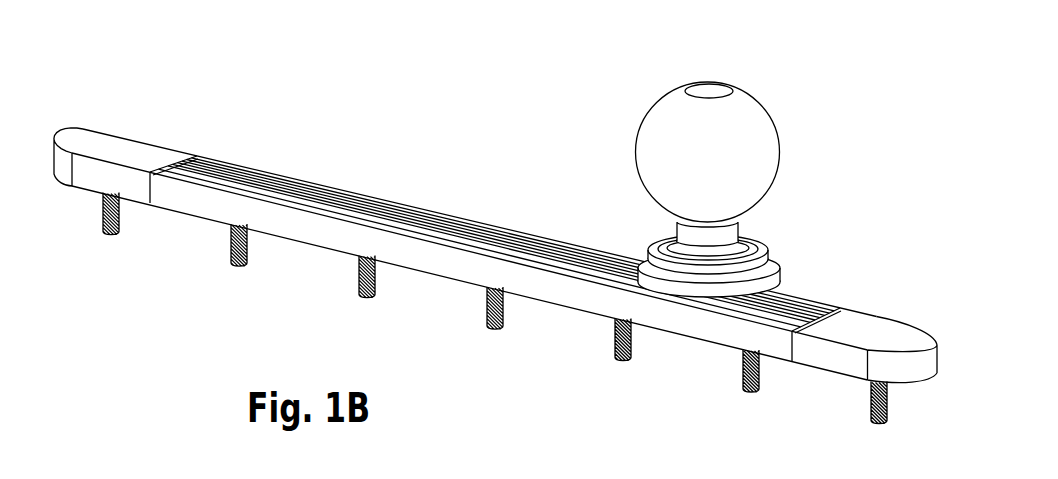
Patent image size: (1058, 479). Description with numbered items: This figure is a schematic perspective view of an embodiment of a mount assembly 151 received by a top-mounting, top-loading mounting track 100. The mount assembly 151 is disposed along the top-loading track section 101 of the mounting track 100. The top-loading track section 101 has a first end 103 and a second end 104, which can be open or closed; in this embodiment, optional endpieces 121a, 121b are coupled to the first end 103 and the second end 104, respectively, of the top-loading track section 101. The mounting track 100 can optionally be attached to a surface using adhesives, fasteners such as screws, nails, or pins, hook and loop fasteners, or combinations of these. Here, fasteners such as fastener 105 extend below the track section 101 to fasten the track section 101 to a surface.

The top-loading mounting track 100 is at (495, 229).
The top-loading track section 101 is at (402, 179).
The first end 103 is at (848, 230).
The second end 104 is at (232, 117).
The fastener 105 is at (616, 347).
The endpiece 121a is at (887, 304).
The endpiece 121b is at (128, 112).
The mount assembly 151 is at (807, 103).